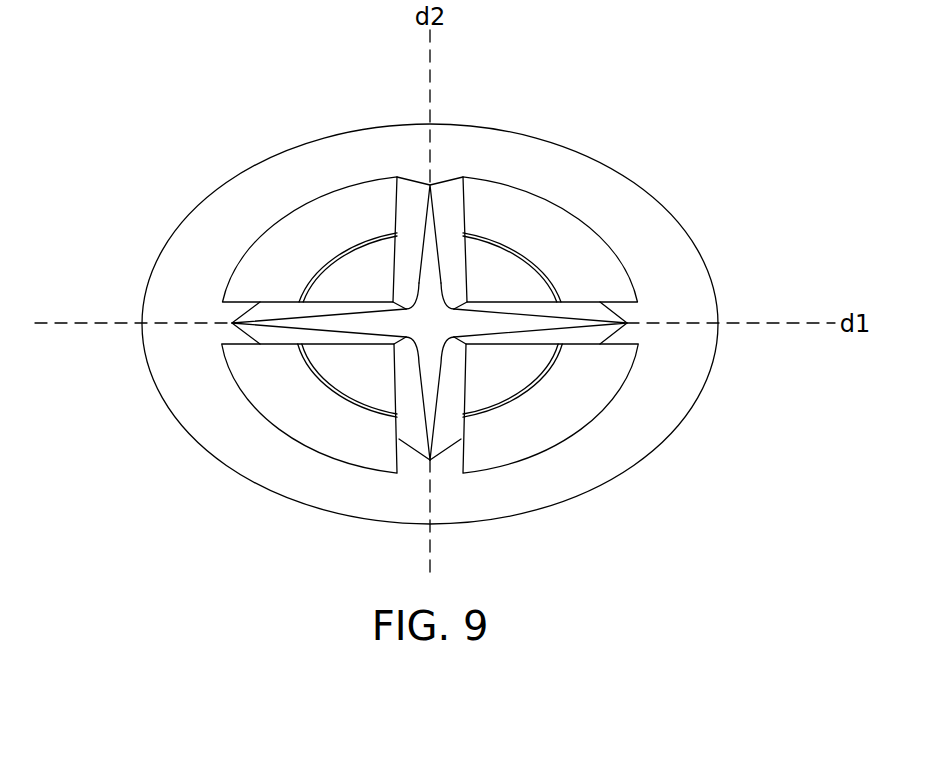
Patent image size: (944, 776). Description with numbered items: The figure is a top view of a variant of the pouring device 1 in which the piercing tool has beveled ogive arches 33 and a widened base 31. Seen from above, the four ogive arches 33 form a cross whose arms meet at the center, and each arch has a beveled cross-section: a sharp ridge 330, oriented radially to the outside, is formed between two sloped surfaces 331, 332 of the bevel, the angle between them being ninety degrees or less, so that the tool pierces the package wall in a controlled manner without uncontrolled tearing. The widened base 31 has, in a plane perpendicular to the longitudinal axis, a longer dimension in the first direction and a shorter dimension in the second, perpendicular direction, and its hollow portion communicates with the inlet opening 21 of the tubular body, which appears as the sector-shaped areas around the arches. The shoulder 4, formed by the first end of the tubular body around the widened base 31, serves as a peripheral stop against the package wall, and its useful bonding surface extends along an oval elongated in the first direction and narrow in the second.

The pouring device 1 is at (334, 95).
The shoulder 4 is at (690, 266).
The inlet opening 21 is at (590, 235).
The widened base 31 is at (449, 178).
The ogive arches 33 is at (399, 328).
The ridge 330 is at (389, 327).
The sloped surface 331 is at (291, 308).
The sloped surface 332 is at (292, 337).